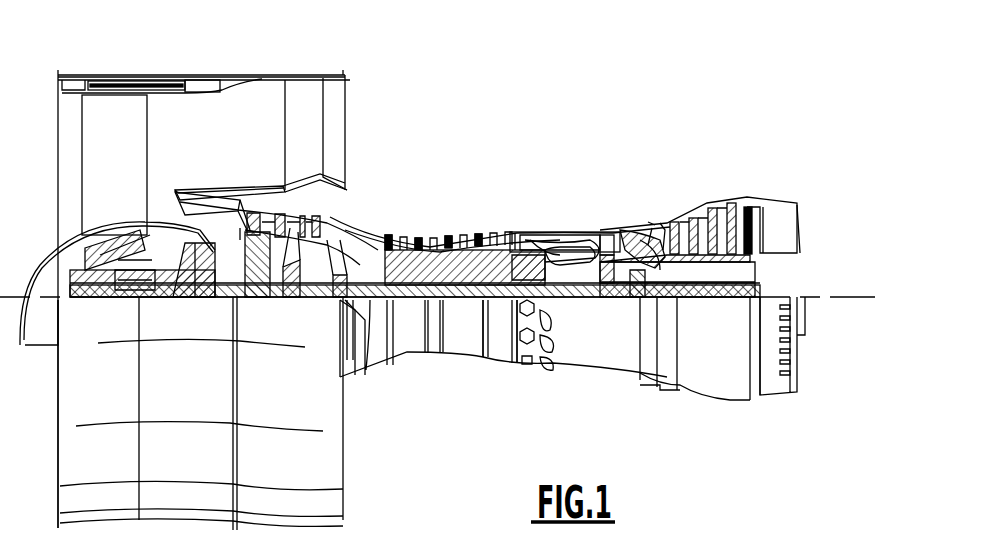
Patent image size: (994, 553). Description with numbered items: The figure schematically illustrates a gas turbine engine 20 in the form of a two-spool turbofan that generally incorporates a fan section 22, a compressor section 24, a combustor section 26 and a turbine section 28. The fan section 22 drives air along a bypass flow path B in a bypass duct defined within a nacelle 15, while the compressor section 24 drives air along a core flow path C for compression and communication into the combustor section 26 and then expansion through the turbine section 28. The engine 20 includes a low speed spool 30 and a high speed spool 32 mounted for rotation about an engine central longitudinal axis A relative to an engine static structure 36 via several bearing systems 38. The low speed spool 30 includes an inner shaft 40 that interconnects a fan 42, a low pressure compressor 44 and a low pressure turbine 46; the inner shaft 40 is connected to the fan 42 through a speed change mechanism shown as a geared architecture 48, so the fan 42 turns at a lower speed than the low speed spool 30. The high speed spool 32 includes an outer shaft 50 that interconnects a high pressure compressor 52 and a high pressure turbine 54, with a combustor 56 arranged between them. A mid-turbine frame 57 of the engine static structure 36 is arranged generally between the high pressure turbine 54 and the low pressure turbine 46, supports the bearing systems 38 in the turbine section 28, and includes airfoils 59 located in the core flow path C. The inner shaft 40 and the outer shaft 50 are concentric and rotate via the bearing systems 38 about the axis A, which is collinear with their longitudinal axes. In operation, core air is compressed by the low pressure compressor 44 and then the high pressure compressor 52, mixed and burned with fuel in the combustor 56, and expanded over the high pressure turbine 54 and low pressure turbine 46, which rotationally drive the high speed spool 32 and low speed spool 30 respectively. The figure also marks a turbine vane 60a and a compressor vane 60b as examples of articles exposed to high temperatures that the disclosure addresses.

The nacelle 15 is at (196, 75).
The gas turbine engine 20 is at (559, 117).
The fan section 22 is at (143, 58).
The compressor section 24 is at (377, 216).
The combustor section 26 is at (552, 200).
The turbine section 28 is at (670, 190).
The low speed spool 30 is at (467, 312).
The high speed spool 32 is at (510, 250).
The engine static structure 36 is at (499, 378).
The bearing systems 38 is at (312, 297).
The inner shaft 40 is at (366, 368).
The fan 42 is at (133, 176).
The low pressure compressor 44 is at (345, 176).
The low pressure turbine 46 is at (709, 205).
The geared architecture 48 is at (206, 297).
The outer shaft 50 is at (567, 300).
The high pressure compressor 52 is at (440, 247).
The high pressure turbine 54 is at (638, 222).
The combustor 56 is at (560, 247).
The mid-turbine frame 57 is at (648, 220).
The airfoils 59 is at (652, 260).
The turbine vane 60a is at (662, 222).
The compressor vane 60b is at (490, 240).
The engine central longitudinal axis A is at (872, 297).
The bypass flow path B is at (160, 133).
The core flow path C is at (195, 213).